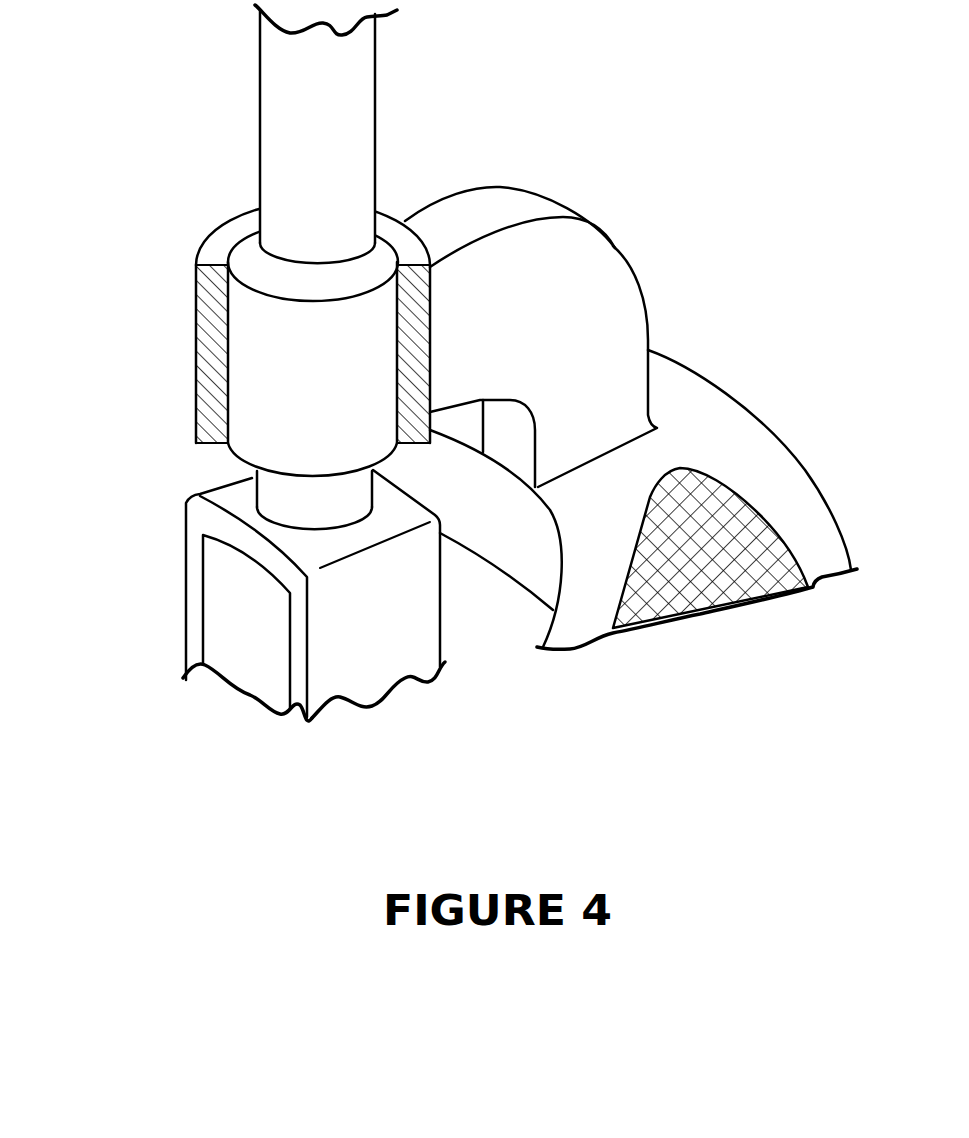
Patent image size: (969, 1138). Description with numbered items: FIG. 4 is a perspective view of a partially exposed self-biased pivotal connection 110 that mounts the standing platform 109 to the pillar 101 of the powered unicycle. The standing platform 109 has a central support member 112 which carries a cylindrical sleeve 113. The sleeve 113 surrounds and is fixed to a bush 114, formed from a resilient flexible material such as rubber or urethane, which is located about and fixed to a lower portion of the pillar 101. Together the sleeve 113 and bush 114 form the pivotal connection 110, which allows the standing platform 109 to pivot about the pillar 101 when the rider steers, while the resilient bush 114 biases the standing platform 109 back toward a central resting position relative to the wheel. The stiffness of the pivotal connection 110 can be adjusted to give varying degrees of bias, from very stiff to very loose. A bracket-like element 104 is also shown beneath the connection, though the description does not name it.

The pillar 101 is at (350, 140).
The bracket 104 is at (300, 677).
The standing platform 109 is at (762, 463).
The pivotal connection 110 is at (195, 212).
The central support member 112 is at (580, 273).
The cylindrical sleeve 113 is at (205, 372).
The bush 114 is at (267, 437).